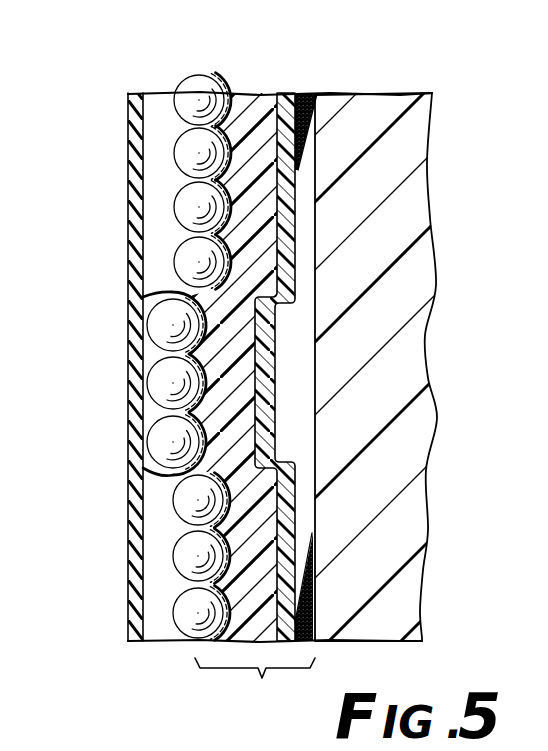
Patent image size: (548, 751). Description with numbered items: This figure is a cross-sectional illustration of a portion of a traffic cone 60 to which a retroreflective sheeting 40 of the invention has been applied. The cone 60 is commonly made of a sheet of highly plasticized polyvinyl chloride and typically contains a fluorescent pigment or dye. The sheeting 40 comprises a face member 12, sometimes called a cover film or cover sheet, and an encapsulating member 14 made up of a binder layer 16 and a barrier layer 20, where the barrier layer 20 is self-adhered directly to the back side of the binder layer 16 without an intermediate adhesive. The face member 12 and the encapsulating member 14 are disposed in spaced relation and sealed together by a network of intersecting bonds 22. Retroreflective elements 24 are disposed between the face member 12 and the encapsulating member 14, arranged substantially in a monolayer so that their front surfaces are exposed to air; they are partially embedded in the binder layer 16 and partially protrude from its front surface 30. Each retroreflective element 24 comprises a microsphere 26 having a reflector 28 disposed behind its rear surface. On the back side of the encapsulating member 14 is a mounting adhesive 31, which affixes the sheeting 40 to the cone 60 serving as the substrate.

The face member 12 is at (138, 123).
The encapsulating member 14 is at (255, 687).
The binder layer 16 is at (252, 93).
The barrier layer 20 is at (288, 94).
The intersecting bonds 22 is at (150, 358).
The retroreflective elements 24 is at (185, 642).
The microspheres 26 is at (188, 208).
The reflectors 28 is at (230, 93).
The front surface 30 is at (190, 532).
The mounting adhesive 31 is at (309, 95).
The sheeting 40 is at (128, 190).
The traffic cone 60 is at (414, 105).